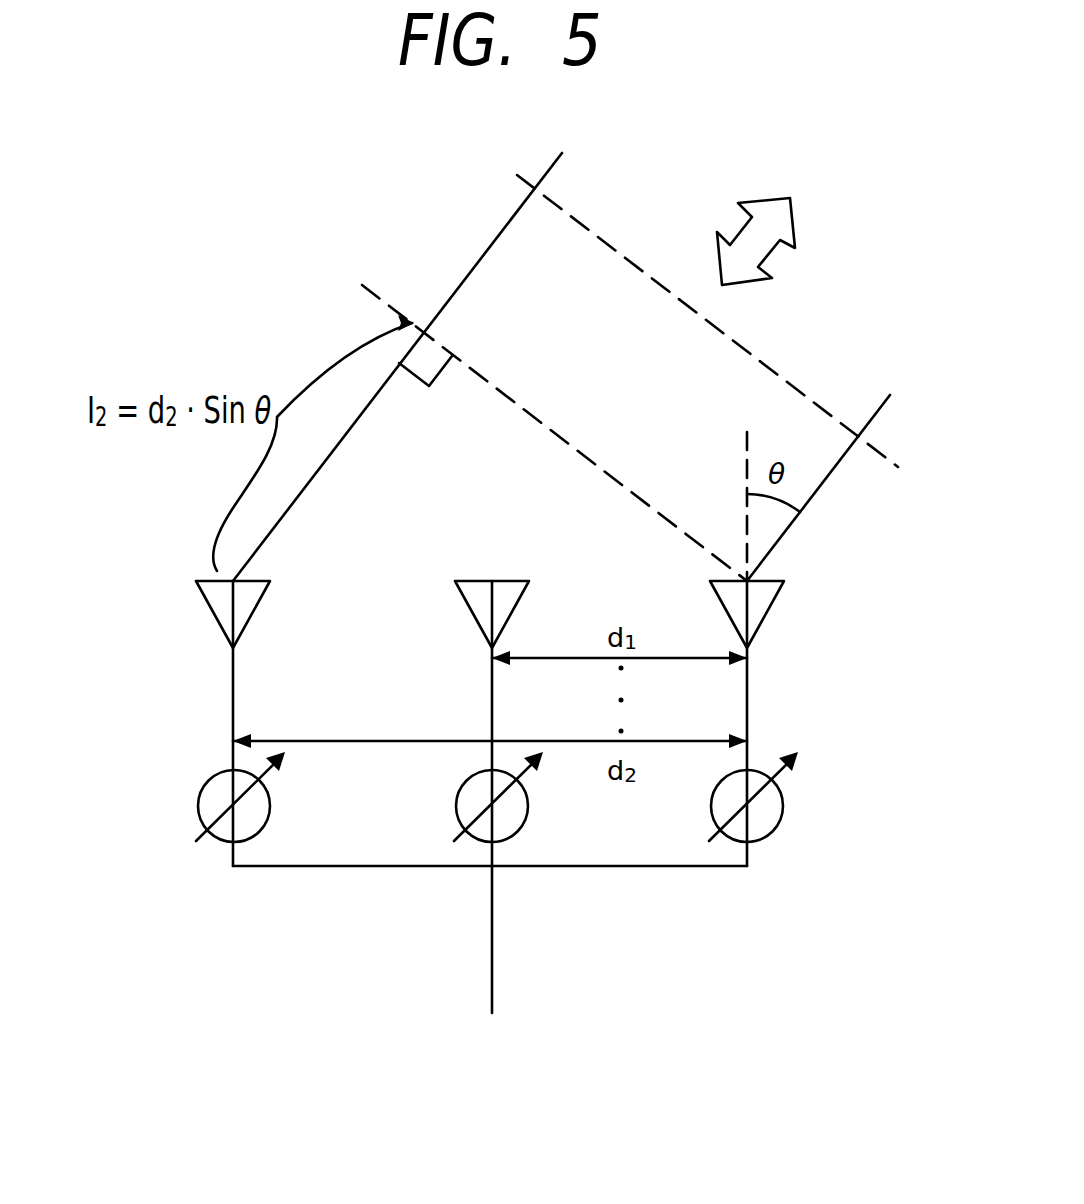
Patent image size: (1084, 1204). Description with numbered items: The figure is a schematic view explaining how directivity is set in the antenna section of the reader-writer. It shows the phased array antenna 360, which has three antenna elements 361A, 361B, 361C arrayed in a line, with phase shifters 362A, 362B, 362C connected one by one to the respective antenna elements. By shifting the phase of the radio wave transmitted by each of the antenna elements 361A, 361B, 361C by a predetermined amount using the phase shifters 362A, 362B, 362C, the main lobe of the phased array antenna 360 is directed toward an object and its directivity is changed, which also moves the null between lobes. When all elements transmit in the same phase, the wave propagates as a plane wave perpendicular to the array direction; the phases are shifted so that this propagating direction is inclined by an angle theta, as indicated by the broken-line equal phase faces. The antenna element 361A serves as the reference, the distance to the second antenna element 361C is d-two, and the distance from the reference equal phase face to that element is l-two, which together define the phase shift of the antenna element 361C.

The phased array antenna 360 is at (731, 910).
The antenna element 361A is at (765, 614).
The antenna element 361B is at (470, 614).
The antenna element 361C is at (213, 614).
The phase shifter 362A is at (783, 806).
The phase shifter 362B is at (456, 808).
The phase shifter 362C is at (198, 808).